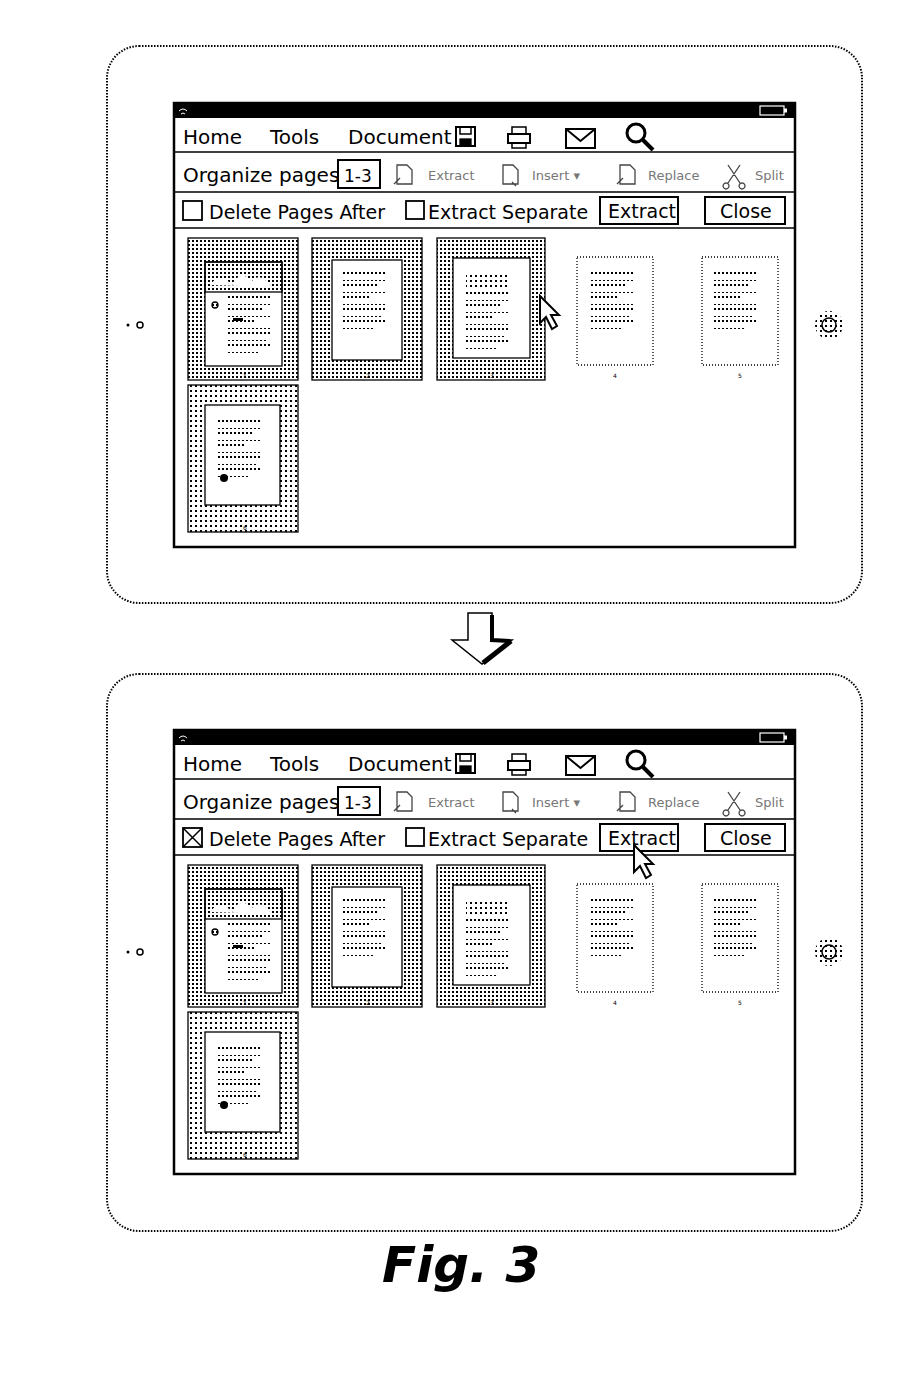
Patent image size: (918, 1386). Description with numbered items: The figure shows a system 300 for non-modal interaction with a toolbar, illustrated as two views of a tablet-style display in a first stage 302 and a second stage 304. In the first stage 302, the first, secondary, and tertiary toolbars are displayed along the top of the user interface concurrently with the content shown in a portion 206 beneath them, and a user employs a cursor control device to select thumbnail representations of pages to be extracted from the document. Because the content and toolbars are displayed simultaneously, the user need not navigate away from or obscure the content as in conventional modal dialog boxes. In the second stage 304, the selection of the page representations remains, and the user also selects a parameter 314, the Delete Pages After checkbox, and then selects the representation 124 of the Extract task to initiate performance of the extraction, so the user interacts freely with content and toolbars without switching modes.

The system 300 is at (92, 26).
The first stage 302 is at (97, 58).
The second stage 304 is at (100, 676).
The representation of the task 124 is at (628, 848).
The portion 206 is at (174, 465).
The parameter 314 is at (166, 847).